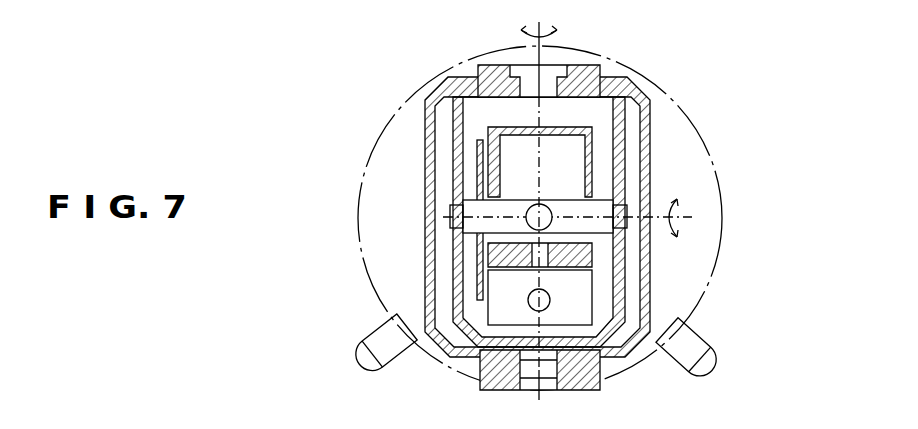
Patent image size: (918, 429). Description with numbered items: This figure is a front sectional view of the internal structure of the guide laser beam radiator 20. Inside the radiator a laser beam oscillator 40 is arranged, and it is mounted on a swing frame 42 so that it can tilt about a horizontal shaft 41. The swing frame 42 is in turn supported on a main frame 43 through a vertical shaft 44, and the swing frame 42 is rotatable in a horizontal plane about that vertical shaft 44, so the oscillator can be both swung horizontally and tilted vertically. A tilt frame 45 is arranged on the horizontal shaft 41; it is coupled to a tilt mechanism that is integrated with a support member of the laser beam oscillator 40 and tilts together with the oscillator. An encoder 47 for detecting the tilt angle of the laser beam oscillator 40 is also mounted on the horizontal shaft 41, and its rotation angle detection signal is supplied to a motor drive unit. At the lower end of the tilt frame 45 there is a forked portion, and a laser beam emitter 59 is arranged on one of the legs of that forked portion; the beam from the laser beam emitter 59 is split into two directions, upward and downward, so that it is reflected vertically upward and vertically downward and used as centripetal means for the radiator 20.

The guide laser beam radiator 20 is at (700, 142).
The laser beam oscillator 40 is at (560, 200).
The horizontal shaft 41 is at (610, 226).
The swing frame 42 is at (622, 176).
The main frame 43 is at (427, 178).
The vertical shaft 44 is at (566, 82).
The tilt frame 45 is at (500, 127).
The encoder 47 is at (480, 285).
The laser beam emitter 59 is at (550, 300).